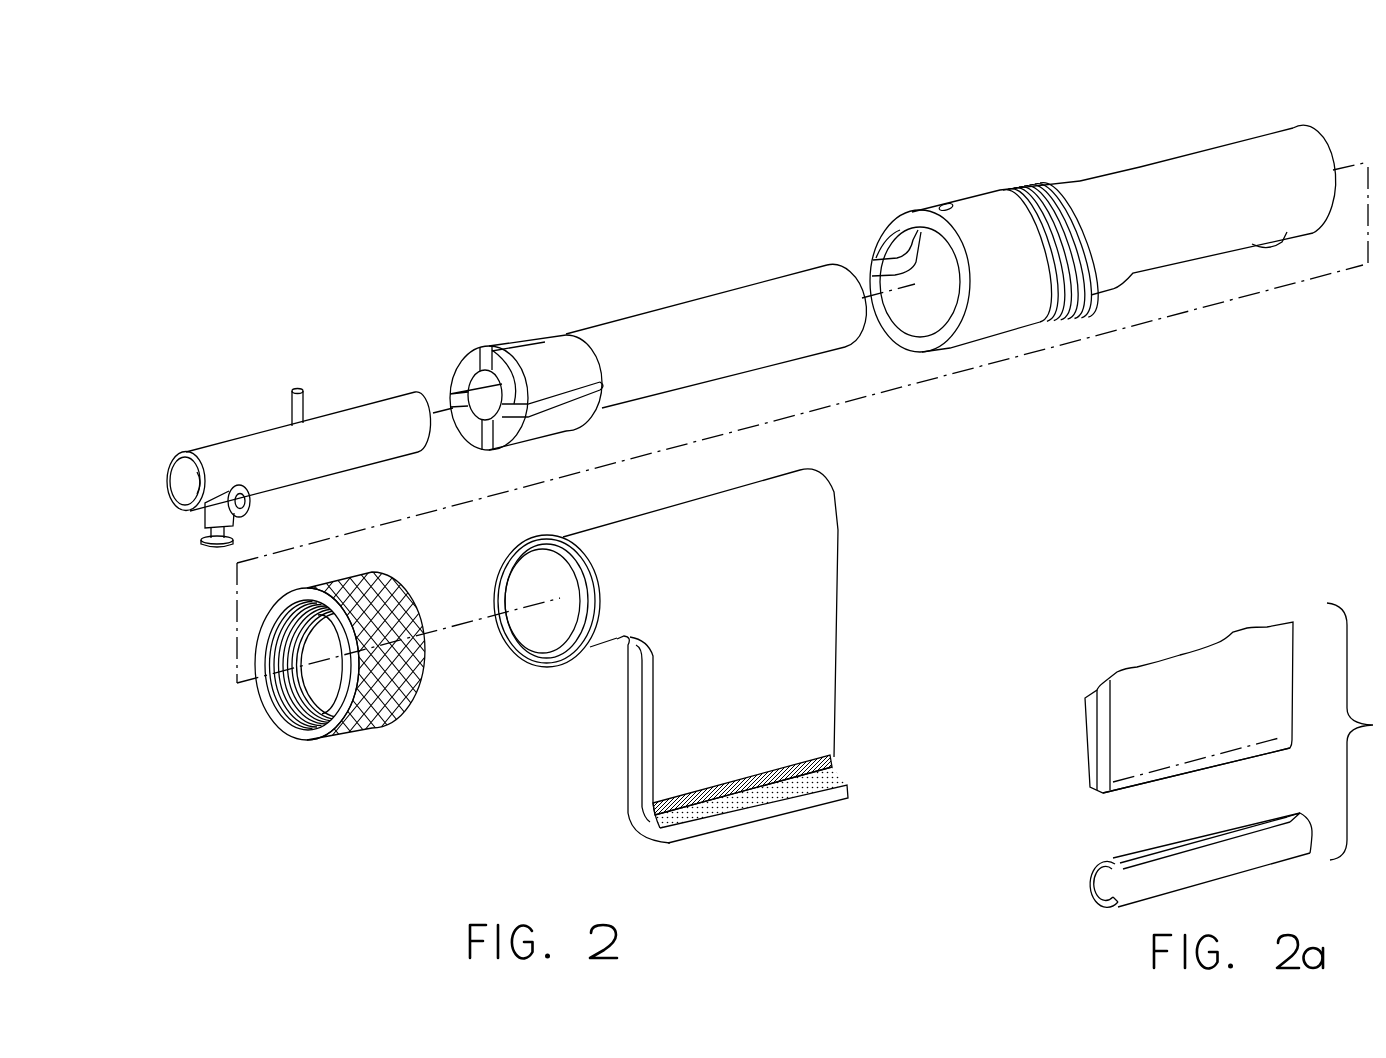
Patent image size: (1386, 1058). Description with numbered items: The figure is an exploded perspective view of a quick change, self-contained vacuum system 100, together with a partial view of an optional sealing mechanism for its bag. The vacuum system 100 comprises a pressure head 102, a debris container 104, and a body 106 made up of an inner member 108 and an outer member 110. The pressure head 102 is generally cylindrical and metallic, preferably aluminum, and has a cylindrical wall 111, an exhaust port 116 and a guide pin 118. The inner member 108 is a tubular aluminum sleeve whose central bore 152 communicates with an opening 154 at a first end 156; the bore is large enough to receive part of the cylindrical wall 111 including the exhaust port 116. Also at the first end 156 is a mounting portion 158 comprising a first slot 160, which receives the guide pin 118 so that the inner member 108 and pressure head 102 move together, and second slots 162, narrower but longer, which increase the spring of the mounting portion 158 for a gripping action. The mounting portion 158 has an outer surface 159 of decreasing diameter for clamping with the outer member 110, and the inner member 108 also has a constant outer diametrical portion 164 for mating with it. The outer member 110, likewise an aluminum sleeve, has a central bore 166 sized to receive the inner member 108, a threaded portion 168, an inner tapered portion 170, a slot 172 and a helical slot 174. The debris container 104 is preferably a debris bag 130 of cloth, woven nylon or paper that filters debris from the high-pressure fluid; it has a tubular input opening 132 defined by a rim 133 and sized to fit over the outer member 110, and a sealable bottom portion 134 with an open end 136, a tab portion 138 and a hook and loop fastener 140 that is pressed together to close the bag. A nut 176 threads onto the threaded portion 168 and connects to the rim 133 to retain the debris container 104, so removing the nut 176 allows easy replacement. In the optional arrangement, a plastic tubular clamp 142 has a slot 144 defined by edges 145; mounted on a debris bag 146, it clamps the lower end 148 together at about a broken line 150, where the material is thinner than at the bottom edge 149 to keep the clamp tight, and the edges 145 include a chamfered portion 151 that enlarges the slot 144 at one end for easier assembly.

In FIG. 2, the vacuum system 100 is at (290, 833).
In FIG. 2, the pressure head 102 is at (178, 518).
In FIG. 2, the debris container 104 is at (614, 743).
In FIG. 2, the body 106 is at (840, 177).
In FIG. 2, the inner member 108 is at (656, 310).
In FIG. 2, the outer member 110 is at (1325, 143).
In FIG. 2, the cylindrical wall 111 is at (310, 463).
In FIG. 2, the exhaust port 116 is at (430, 413).
In FIG. 2, the guide pin 118 is at (296, 388).
In FIG. 2, the debris bag 130 is at (840, 562).
In FIG. 2, the input opening 132 is at (532, 632).
In FIG. 2, the rim 133 is at (508, 562).
In FIG. 2, the sealable bottom portion 134 is at (642, 833).
In FIG. 2, the open end 136 is at (753, 790).
In FIG. 2, the tab portion 138 is at (657, 823).
In FIG. 2, the hook and loop fastener 140 is at (833, 782).
In FIG. 2a, the tubular clamp 142 is at (1230, 858).
In FIG. 2a, the slot 144 is at (1113, 858).
In FIG. 2a, the edges 145 is at (1177, 837).
In FIG. 2a, the debris bag 146 is at (1223, 657).
In FIG. 2a, the lower end 148 is at (1220, 762).
In FIG. 2a, the bottom edge 149 is at (1267, 747).
In FIG. 2a, the broken line 150 is at (1237, 745).
In FIG. 2a, the chamfered portion 151 is at (1293, 810).
In FIG. 2, the central bore 152 is at (460, 426).
In FIG. 2, the opening 154 is at (462, 368).
In FIG. 2, the first end 156 is at (474, 418).
In FIG. 2, the mounting portion 158 is at (540, 326).
In FIG. 2, the outer surface 159 is at (575, 376).
In FIG. 2, the first slot 160 is at (483, 365).
In FIG. 2, the second slots 162 is at (452, 385).
In FIG. 2, the constant outer diametrical portion 164 is at (756, 312).
In FIG. 2, the central bore 166 is at (918, 313).
In FIG. 2, the threaded portion 168 is at (1043, 164).
In FIG. 2, the inner tapered portion 170 is at (885, 242).
In FIG. 2, the slot 172 is at (872, 268).
In FIG. 2, the helical slot 174 is at (942, 206).
In FIG. 2, the nut 176 is at (350, 738).